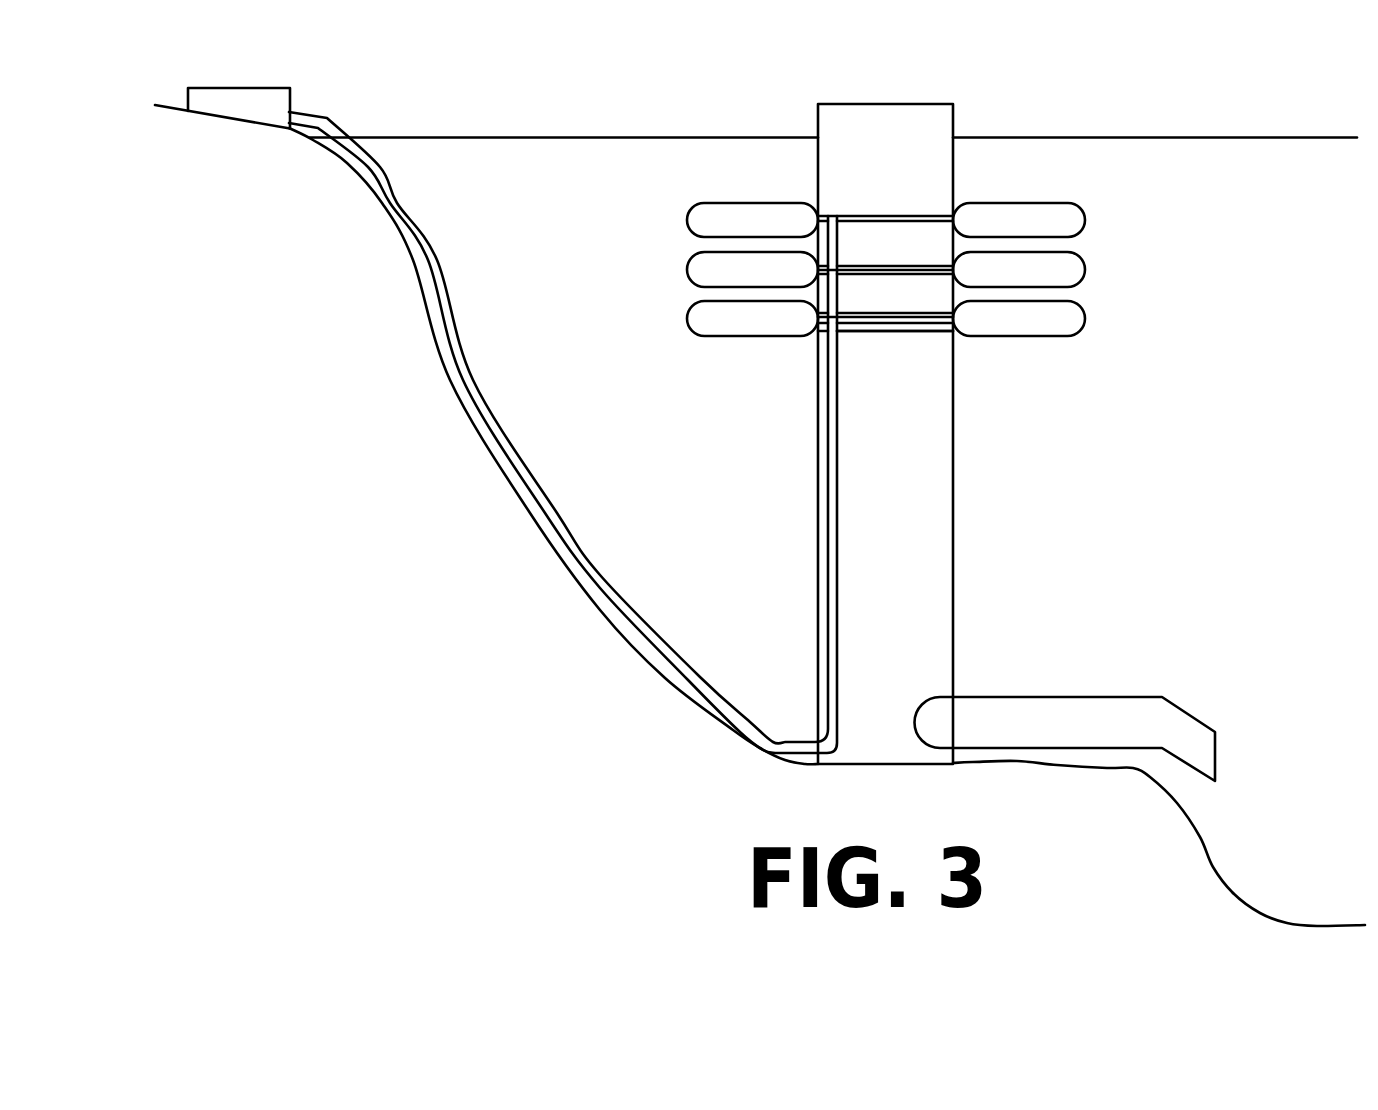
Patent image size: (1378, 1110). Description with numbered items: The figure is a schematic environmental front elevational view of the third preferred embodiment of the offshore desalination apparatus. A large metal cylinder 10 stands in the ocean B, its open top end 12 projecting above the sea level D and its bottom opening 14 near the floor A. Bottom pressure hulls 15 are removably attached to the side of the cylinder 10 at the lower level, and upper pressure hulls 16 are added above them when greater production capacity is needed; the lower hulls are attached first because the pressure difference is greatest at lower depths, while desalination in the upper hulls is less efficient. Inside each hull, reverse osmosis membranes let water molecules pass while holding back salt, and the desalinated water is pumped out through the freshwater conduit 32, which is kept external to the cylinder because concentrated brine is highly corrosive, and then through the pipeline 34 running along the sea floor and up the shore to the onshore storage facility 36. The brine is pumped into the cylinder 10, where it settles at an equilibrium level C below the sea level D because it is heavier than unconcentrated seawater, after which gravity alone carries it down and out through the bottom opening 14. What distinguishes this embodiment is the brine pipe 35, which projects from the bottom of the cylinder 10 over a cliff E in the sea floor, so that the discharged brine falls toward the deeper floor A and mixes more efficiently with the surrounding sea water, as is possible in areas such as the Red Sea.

The metal cylinder 10 is at (953, 520).
The open top end 12 is at (900, 104).
The bottom opening 14 is at (915, 707).
The bottom pressure hulls 15 is at (687, 320).
The upper pressure hulls 16 is at (687, 268).
The freshwater conduit 32 is at (912, 266).
The pipeline 34 is at (578, 543).
The brine pipe 35 is at (1162, 697).
The onshore storage facility 36 is at (236, 88).
The floor of the ocean A is at (1343, 923).
The ocean B is at (1160, 137).
The equilibrium level of brine C is at (896, 333).
The sea level D is at (635, 137).
The cliff E is at (1210, 837).